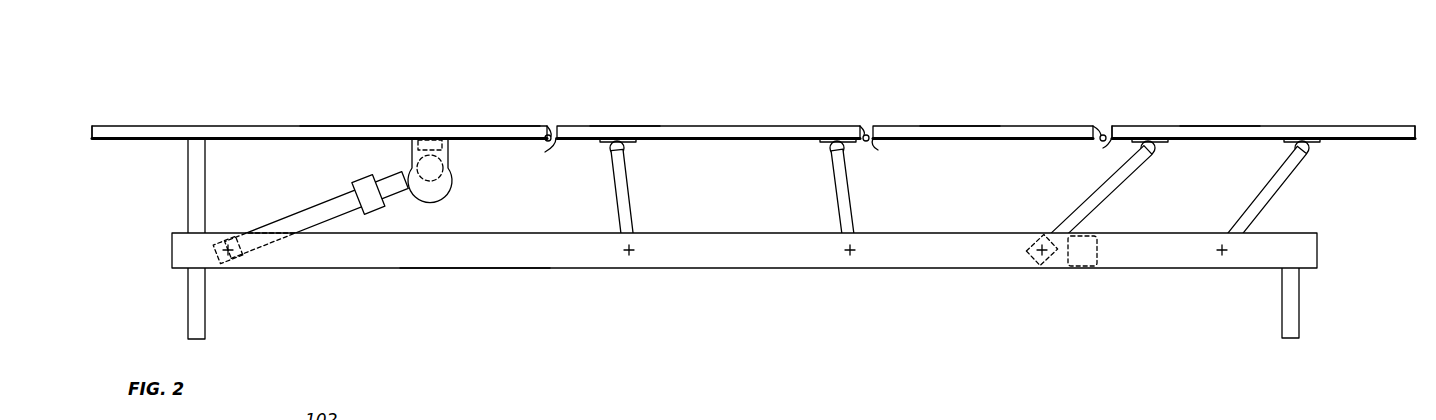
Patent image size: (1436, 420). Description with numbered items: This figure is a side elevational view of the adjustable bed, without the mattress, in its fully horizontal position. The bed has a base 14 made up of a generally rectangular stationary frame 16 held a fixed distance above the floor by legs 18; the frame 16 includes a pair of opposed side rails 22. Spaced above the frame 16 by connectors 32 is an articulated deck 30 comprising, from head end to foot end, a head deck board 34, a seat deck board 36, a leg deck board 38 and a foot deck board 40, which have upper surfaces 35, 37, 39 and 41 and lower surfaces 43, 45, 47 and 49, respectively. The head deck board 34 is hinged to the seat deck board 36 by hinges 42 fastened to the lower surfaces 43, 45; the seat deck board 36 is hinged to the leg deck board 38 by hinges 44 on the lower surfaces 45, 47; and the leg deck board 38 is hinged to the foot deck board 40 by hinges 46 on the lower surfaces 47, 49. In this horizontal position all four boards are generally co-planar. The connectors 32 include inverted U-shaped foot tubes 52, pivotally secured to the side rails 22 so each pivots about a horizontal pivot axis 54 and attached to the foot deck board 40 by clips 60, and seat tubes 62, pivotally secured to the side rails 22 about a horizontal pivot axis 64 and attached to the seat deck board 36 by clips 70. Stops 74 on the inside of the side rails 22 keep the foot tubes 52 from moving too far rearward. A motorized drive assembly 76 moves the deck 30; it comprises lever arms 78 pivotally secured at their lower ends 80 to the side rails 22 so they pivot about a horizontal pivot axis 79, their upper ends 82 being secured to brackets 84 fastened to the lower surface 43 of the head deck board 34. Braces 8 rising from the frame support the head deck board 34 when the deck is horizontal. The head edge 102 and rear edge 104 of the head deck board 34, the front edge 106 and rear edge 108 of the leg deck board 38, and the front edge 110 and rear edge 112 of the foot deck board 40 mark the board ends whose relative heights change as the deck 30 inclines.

The brace 8 is at (188, 188).
The base 14 is at (975, 290).
The stationary frame 16 is at (742, 270).
The legs 18 is at (188, 300).
The side rails 22 is at (465, 268).
The articulated deck 30 is at (820, 97).
The connectors 32 is at (783, 218).
The head deck board 34 is at (193, 125).
The upper surface 35 is at (352, 125).
The seat deck board 36 is at (720, 125).
The upper surface 37 is at (622, 125).
The leg deck board 38 is at (1035, 125).
The upper surface 39 is at (962, 125).
The foot deck board 40 is at (1306, 125).
The upper surface 41 is at (1210, 125).
The hinges 42 is at (546, 143).
The lower surface 43 is at (250, 142).
The hinges 44 is at (870, 141).
The lower surface 45 is at (700, 142).
The hinges 46 is at (1100, 142).
The lower surface 47 is at (990, 142).
The lower surface 49 is at (1253, 142).
The foot tubes 52 is at (1068, 210).
The horizontal pivot axis 54 is at (1048, 255).
The clips 60 is at (1160, 152).
The seat tubes 62 is at (617, 190).
The horizontal pivot axis 64 is at (630, 253).
The clips 70 is at (608, 150).
The stops 74 is at (1100, 262).
The motorized drive assembly 76 is at (305, 160).
The lever arms 78 is at (322, 193).
The horizontal pivot axis 79 is at (232, 254).
The lower ends 80 is at (226, 258).
The upper ends 82 is at (398, 162).
The brackets 84 is at (455, 172).
The head edge 102 is at (92, 128).
The rear edge 104 is at (549, 134).
The front edge 106 is at (867, 134).
The rear edge 108 is at (1102, 134).
The front edge 110 is at (1120, 125).
The rear edge 112 is at (1415, 136).